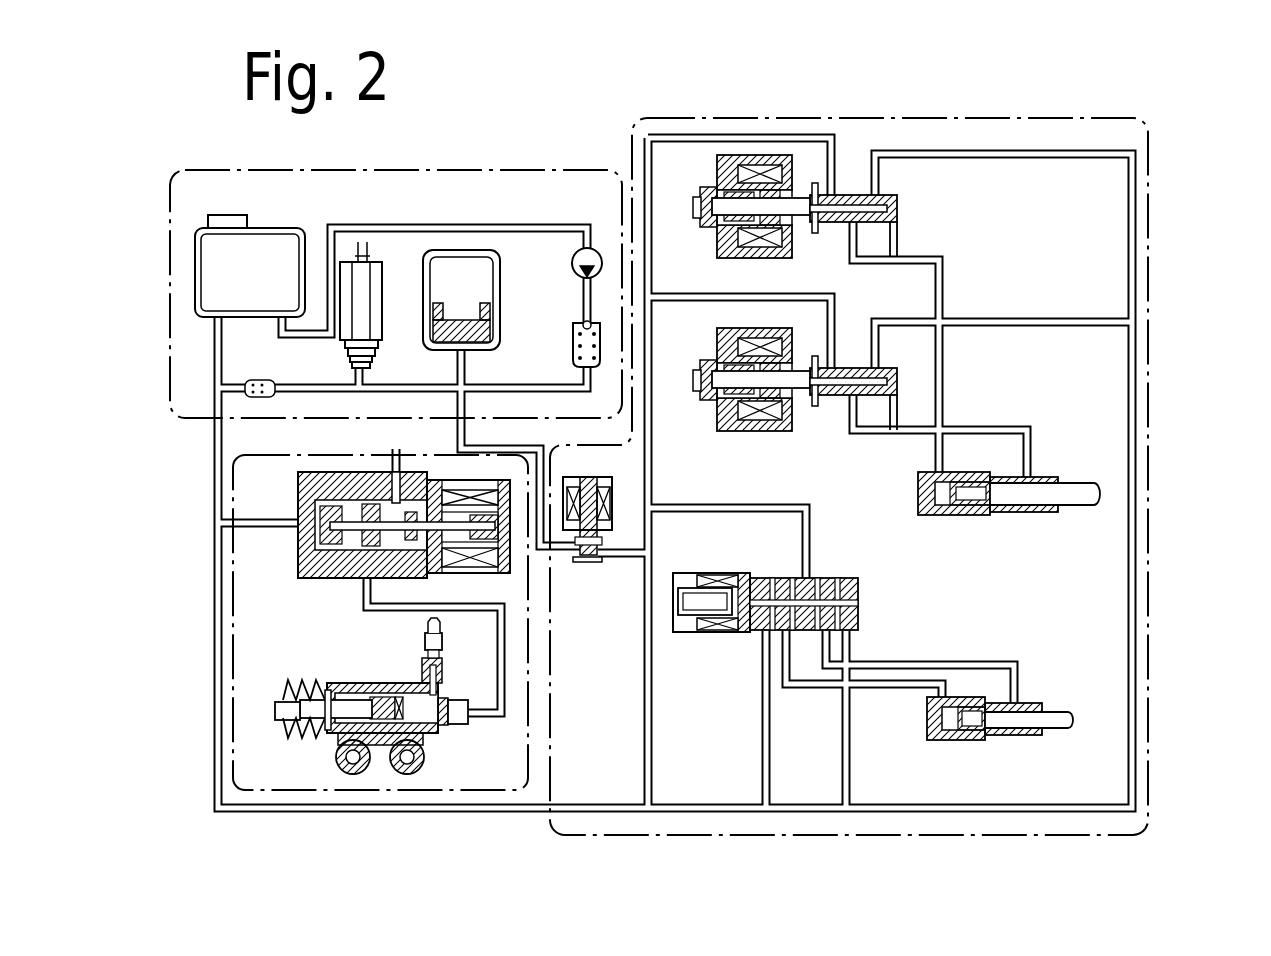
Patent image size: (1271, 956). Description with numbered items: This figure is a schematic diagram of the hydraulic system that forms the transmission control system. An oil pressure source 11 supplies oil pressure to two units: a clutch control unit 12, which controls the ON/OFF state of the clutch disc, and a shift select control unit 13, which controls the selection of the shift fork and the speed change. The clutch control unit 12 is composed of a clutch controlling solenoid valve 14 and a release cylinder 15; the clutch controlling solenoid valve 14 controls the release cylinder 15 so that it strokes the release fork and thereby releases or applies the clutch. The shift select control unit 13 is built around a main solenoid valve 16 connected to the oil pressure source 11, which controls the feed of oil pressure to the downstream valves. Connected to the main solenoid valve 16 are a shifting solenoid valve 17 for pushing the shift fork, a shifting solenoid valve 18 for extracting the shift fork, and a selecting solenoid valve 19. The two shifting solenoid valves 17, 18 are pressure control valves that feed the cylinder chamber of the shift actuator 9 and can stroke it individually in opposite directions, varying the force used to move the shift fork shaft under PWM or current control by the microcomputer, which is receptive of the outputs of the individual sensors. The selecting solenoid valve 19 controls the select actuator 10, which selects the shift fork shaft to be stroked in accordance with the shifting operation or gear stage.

The shift actuator 9 is at (1038, 470).
The select actuator 10 is at (1028, 703).
The oil pressure source 11 is at (437, 183).
The clutch control unit 12 is at (245, 593).
The shift select control unit 13 is at (1140, 243).
The clutch controlling solenoid valve 14 is at (308, 490).
The release cylinder 15 is at (300, 687).
The main solenoid valve 16 is at (577, 563).
The shifting solenoid valve 17 is at (702, 188).
The shifting solenoid valve 18 is at (717, 342).
The selecting solenoid valve 19 is at (681, 573).